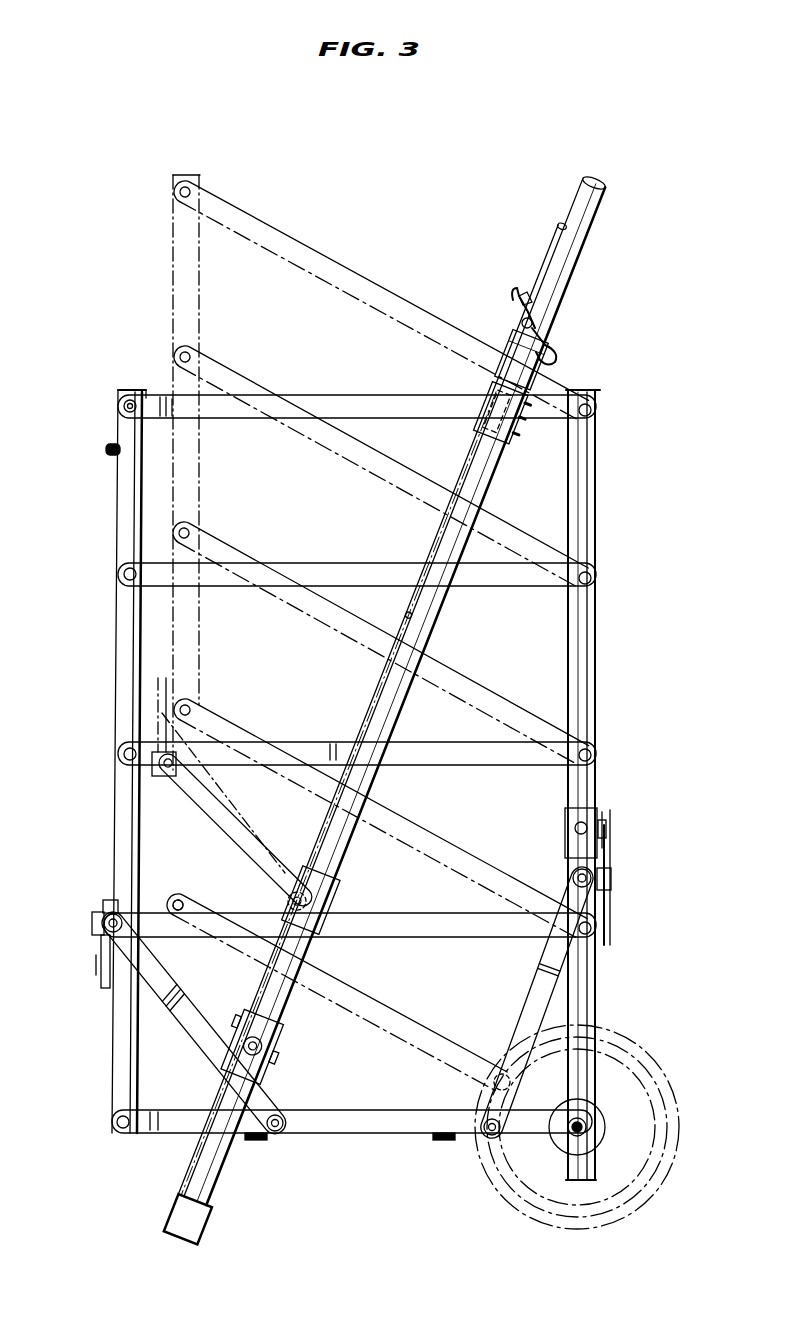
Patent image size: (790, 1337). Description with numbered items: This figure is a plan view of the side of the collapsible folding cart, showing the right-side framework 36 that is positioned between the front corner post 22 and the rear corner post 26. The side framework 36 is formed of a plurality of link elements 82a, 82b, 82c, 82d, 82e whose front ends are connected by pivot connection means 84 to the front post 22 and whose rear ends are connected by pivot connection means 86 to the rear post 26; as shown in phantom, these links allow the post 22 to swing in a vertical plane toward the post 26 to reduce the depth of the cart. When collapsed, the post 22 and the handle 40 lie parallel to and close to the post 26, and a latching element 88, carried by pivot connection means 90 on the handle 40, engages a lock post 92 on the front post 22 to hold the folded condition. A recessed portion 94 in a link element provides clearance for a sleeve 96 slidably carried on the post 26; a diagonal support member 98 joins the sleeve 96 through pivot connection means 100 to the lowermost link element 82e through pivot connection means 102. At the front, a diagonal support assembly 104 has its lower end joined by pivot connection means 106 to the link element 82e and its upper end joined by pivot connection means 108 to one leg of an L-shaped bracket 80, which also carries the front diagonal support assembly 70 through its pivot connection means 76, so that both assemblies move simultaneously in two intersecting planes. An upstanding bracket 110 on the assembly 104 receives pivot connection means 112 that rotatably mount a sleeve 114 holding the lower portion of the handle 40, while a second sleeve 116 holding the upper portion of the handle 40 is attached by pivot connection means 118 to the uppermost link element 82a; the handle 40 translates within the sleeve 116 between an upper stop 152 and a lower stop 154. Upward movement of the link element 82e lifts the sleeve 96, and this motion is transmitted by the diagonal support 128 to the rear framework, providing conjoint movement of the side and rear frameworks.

The front corner post 22 is at (125, 513).
The rear corner post 26 is at (597, 496).
The right-side framework 36 is at (410, 197).
The handle 40 is at (482, 497).
The diagonal support assembly 70 is at (96, 992).
The pivot connection means 76 is at (92, 950).
The L-shaped bracket 80 is at (102, 917).
The link element 82a is at (322, 397).
The link element 82b is at (295, 563).
The link element 82c is at (283, 742).
The link element 82d is at (372, 913).
The link element 82e is at (335, 1110).
The pivot connection means 84 is at (122, 405).
The pivot connection means 86 is at (593, 411).
The latching element 88 is at (557, 358).
The pivot connection means 90 is at (530, 322).
The lock post 92 is at (106, 449).
The recessed portion 94 is at (430, 915).
The sleeve 96 is at (600, 860).
The diagonal support member 98 is at (530, 988).
The pivot connection means 100 is at (570, 872).
The pivot connection means 102 is at (490, 1136).
The diagonal support assembly 104 is at (175, 995).
The pivot connection means 106 is at (278, 1132).
The pivot connection means 108 is at (112, 900).
The upstanding bracket 110 is at (288, 885).
The pivot connection means 112 is at (322, 905).
The sleeve 114 is at (282, 1043).
The second sleeve 116 is at (515, 433).
The pivot connection means 118 is at (480, 430).
The diagonal support 128 is at (612, 938).
The upper stop 152 is at (485, 382).
The lower stop 154 is at (440, 620).